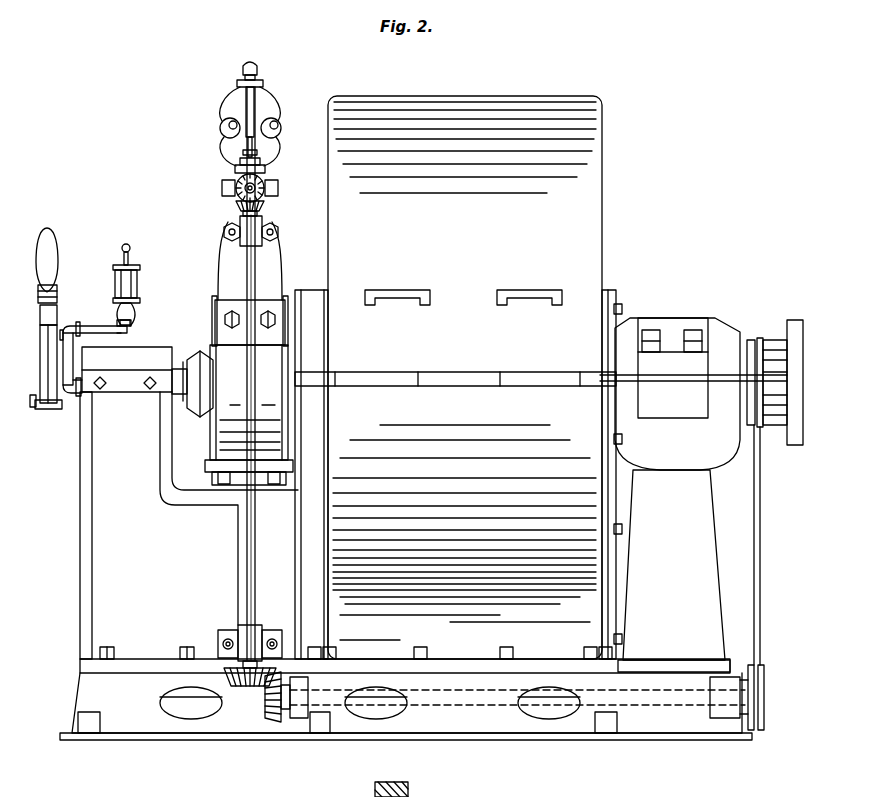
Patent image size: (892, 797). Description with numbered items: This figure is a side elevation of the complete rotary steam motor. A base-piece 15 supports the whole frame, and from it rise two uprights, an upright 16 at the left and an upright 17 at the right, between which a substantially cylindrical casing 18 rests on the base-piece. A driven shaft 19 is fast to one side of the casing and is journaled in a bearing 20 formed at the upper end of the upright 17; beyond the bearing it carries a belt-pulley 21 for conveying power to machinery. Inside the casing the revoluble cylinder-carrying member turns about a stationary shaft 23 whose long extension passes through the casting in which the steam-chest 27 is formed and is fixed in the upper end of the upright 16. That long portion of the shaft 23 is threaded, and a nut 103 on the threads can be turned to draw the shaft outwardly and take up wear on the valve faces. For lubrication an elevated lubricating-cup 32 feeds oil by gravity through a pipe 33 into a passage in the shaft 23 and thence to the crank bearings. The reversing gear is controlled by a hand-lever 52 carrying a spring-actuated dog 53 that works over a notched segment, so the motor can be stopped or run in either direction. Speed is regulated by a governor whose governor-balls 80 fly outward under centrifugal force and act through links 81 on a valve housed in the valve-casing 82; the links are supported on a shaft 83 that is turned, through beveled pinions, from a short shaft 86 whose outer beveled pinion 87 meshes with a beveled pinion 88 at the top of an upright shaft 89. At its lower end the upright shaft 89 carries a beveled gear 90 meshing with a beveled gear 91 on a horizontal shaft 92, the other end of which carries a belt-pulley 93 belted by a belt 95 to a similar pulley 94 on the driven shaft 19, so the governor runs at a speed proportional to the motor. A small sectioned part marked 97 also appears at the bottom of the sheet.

The base-piece 15 is at (248, 722).
The upright 16 is at (80, 546).
The upright 17 is at (710, 575).
The casing 18 is at (590, 243).
The driven shaft 19 is at (745, 370).
The bearing 20 is at (668, 318).
The belt-pulley 21 is at (790, 320).
The stationary shaft 23 is at (178, 368).
The steam-chest 27 is at (218, 446).
The lubricating-cup 32 is at (138, 290).
The pipe 33 is at (92, 337).
The hand-lever 52 is at (54, 305).
The spring-actuated dog 53 is at (53, 266).
The governor-balls 80 is at (220, 127).
The links 81 is at (236, 100).
The valve-casing 82 is at (230, 246).
The shaft 83 is at (246, 140).
The short shaft 86 is at (262, 178).
The beveled pinion 87 is at (270, 188).
The beveled pinion 88 is at (265, 206).
The upright shaft 89 is at (258, 273).
The beveled gear 90 is at (250, 666).
The beveled gear 91 is at (276, 722).
The horizontal shaft 92 is at (400, 703).
The belt-pulley 93 is at (766, 714).
The pulley 94 is at (750, 428).
The belt 95 is at (762, 491).
The section 97 is at (374, 789).
The nut 103 is at (200, 412).